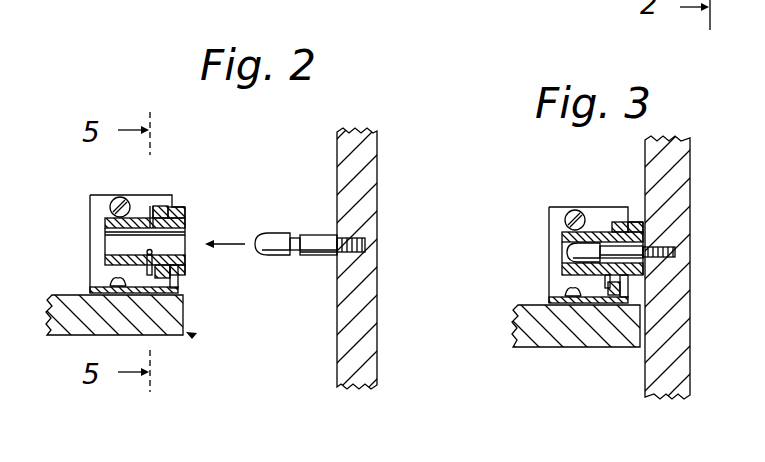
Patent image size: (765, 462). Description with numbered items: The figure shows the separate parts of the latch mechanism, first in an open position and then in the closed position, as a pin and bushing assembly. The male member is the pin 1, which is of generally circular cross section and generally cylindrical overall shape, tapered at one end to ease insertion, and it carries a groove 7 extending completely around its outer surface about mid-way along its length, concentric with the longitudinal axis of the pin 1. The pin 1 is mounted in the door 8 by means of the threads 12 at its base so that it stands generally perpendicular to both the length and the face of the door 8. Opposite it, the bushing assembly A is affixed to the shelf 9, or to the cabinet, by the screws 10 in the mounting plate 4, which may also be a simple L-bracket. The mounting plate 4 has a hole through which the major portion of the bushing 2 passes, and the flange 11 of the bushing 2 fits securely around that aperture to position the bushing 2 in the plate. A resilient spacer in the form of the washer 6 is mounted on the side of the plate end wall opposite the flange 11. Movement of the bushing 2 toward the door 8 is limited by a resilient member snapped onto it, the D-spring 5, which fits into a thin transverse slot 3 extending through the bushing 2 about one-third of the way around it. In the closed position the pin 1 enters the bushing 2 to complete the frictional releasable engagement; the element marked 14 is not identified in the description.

In FIG. 2, the pin 1 is at (318, 258).
In FIG. 3, the pin 1 is at (590, 250).
In FIG. 2, the bushing 2 is at (89, 222).
In FIG. 3, the bushing 2 is at (560, 270).
In FIG. 2, the transverse slot 3 is at (115, 272).
In FIG. 2, the mounting plate 4 is at (183, 290).
In FIG. 2, the D-spring 5 is at (148, 218).
In FIG. 3, the D-spring 5 is at (612, 236).
In FIG. 2, the washer 6 is at (163, 214).
In FIG. 2, the groove 7 is at (290, 236).
In FIG. 2, the door 8 is at (358, 303).
In FIG. 3, the door 8 is at (672, 192).
In FIG. 2, the shelf 9 is at (172, 315).
In FIG. 3, the shelf 9 is at (535, 347).
In FIG. 2, the screws 10 is at (118, 198).
In FIG. 2, the flange 11 is at (186, 221).
In FIG. 2, the threads 12 is at (355, 247).
In FIG. 2, the plug head 14 is at (277, 256).
In FIG. 3, the plug head 14 is at (570, 257).
In FIG. 2, the bushing assembly A is at (190, 334).